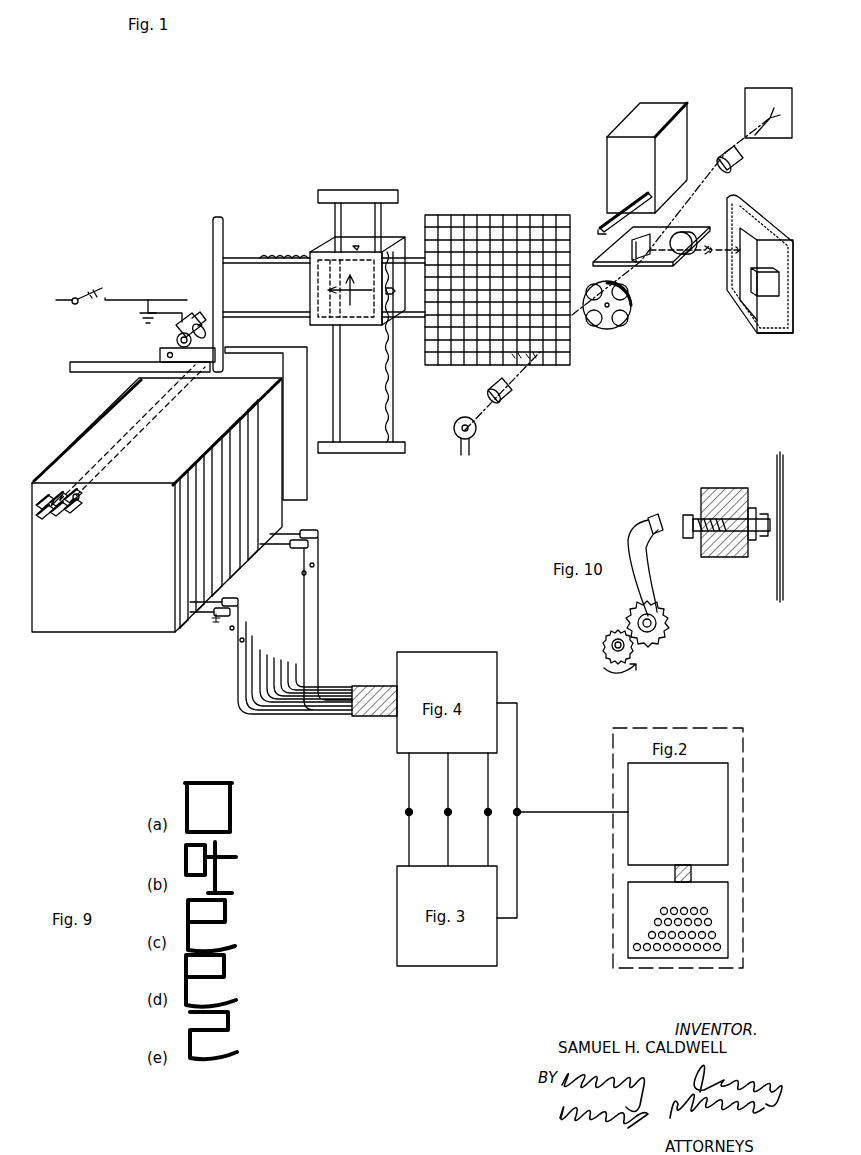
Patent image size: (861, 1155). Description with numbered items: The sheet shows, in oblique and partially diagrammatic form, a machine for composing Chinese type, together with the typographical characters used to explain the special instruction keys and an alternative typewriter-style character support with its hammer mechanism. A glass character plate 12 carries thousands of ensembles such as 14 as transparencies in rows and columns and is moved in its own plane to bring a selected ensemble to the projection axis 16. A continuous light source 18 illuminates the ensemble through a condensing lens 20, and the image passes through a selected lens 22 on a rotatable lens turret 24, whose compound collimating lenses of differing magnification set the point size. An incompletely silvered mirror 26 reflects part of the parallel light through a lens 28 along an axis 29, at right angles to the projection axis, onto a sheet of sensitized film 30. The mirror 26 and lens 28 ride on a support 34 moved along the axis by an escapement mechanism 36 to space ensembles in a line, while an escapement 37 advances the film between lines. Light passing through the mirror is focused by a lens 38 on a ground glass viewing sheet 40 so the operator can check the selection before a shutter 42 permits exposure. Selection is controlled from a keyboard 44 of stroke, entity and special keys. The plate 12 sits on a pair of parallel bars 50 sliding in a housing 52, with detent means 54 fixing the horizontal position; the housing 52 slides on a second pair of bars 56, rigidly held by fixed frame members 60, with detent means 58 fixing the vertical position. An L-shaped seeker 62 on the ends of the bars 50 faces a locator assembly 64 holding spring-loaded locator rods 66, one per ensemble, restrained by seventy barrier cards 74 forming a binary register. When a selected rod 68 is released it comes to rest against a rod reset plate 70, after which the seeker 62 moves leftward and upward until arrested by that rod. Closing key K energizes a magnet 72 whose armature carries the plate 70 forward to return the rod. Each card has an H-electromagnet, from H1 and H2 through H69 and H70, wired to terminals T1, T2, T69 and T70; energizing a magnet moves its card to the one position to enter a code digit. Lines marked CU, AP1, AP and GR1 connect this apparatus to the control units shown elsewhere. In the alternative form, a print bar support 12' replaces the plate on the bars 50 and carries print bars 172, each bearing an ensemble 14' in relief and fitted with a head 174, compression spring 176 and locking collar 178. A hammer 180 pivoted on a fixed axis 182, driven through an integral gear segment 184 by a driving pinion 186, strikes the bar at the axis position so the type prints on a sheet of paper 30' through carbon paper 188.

In FIG. 1, the character plate 12 is at (497, 274).
In FIG. 1, the ensemble 14 is at (534, 378).
In FIG. 1, the projection axis 16 is at (494, 376).
In FIG. 1, the continuous light source 18 is at (474, 434).
In FIG. 1, the condensing lens 20 is at (502, 398).
In FIG. 1, the selected lens 22 is at (592, 282).
In FIG. 1, the rotatable lens turret 24 is at (600, 328).
In FIG. 1, the incompletely silvered mirror 26 is at (638, 258).
In FIG. 1, the lens 28 is at (688, 227).
In FIG. 1, the axis 29 is at (705, 258).
In FIG. 1, the sensitized film 30 is at (760, 261).
In FIG. 1, the support 34 is at (597, 220).
In FIG. 1, the escapement mechanism 36 is at (640, 169).
In FIG. 1, the escapement 37 is at (770, 304).
In FIG. 1, the lens 38 is at (726, 142).
In FIG. 1, the viewing sheet 40 is at (778, 136).
In FIG. 1, the shutter 42 is at (687, 239).
In FIG. 1, the keyboard 44 is at (628, 902).
In FIG. 1, the parallel bars 50 is at (285, 313).
In FIG. 1, the housing 52 is at (320, 250).
In FIG. 1, the detent means 54 is at (358, 240).
In FIG. 1, the second parallel bars 56 is at (339, 362).
In FIG. 1, the detent means 58 is at (400, 296).
In FIG. 1, the fixed frame members 60 is at (358, 191).
In FIG. 1, the L-shaped seeker 62 is at (212, 236).
In FIG. 1, the locator assembly 64 is at (72, 428).
In FIG. 1, the locator rods 66 is at (68, 517).
In FIG. 1, the selected rod 68 is at (74, 492).
In FIG. 1, the rod reset plate 70 is at (244, 351).
In FIG. 1, the magnet 72 is at (190, 319).
In FIG. 1, the barrier cards 74 is at (202, 502).
In FIG. 1, the key K is at (80, 288).
In FIG. 1, the H-electromagnet H69 is at (314, 531).
In FIG. 1, the H-electromagnet H70 is at (322, 538).
In FIG. 1, the terminal T69 is at (321, 582).
In FIG. 1, the terminal T70 is at (321, 568).
In FIG. 1, the H-electromagnet H1 is at (214, 631).
In FIG. 1, the H-electromagnet H2 is at (216, 646).
In FIG. 1, the terminal T1 is at (232, 660).
In FIG. 1, the terminal T2 is at (240, 668).
In FIG. 1, the control unit line CU is at (400, 822).
In FIG. 1, the line AP1 is at (448, 812).
In FIG. 1, the line AP is at (488, 812).
In FIG. 1, the line GR1 is at (520, 815).
In FIG. 10, the print bar support 12' is at (719, 507).
In FIG. 10, the print bars 172 is at (760, 535).
In FIG. 10, the head 174 is at (684, 514).
In FIG. 10, the compression spring 176 is at (678, 525).
In FIG. 10, the locking collar 178 is at (758, 542).
In FIG. 10, the ensemble 14' is at (759, 527).
In FIG. 10, the carbon paper 188 is at (778, 580).
In FIG. 10, the sheet of paper 30' is at (764, 543).
In FIG. 10, the hammer 180 is at (642, 512).
In FIG. 10, the fixed axis 182 is at (647, 602).
In FIG. 10, the gear segment 184 is at (670, 624).
In FIG. 10, the driving pinion 186 is at (612, 616).